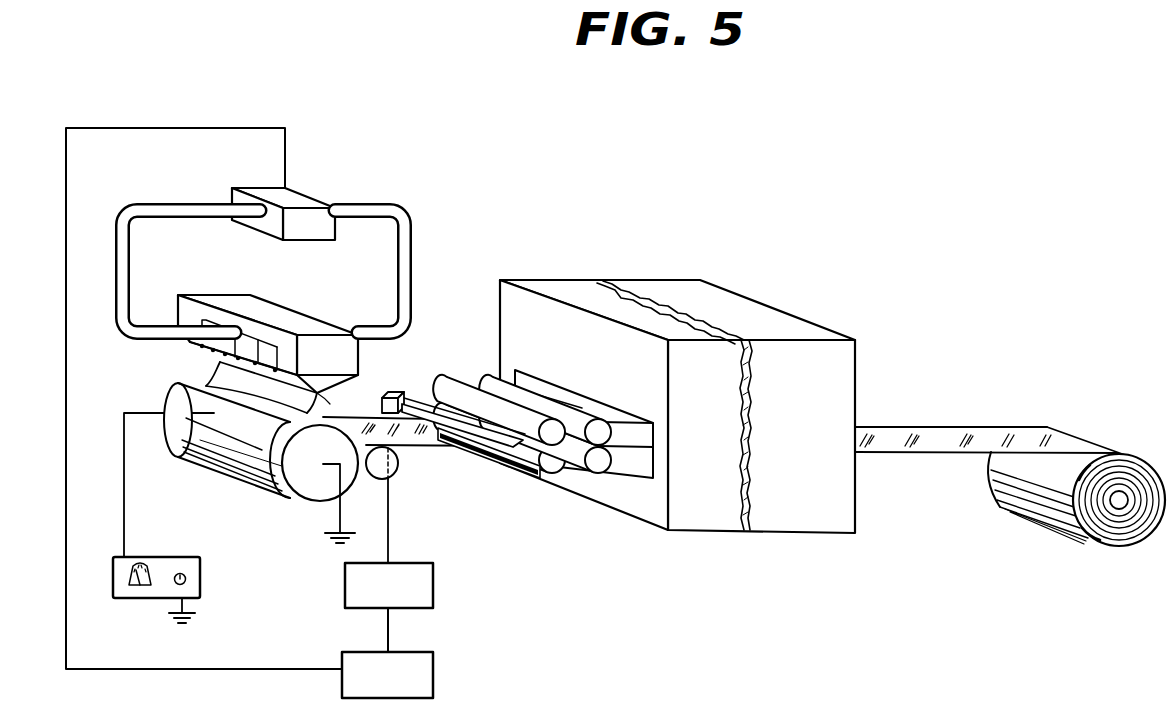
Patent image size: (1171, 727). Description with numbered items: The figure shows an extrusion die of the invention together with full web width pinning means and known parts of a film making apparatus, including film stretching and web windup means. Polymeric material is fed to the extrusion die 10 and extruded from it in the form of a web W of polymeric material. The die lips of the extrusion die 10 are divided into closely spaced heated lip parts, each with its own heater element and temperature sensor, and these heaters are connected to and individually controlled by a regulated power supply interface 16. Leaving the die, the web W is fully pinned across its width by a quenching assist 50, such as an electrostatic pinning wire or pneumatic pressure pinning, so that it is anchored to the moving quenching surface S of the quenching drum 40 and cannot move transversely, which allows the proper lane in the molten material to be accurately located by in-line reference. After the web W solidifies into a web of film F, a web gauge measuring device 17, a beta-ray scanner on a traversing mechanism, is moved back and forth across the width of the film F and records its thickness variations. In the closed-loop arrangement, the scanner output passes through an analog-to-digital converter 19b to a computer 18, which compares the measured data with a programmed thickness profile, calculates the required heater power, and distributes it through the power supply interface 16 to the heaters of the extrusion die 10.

The extrusion die 10 is at (318, 308).
The power supply interface 16 is at (303, 199).
The web gauge measuring device 17 is at (400, 394).
The computer 18 is at (249, 413).
The analog-to-digital converter 19b is at (405, 596).
The quenching drum 40 is at (306, 486).
The quenching assist 50 is at (192, 388).
The quenching surface S is at (172, 432).
The web W is at (333, 404).
The web of film F is at (403, 438).